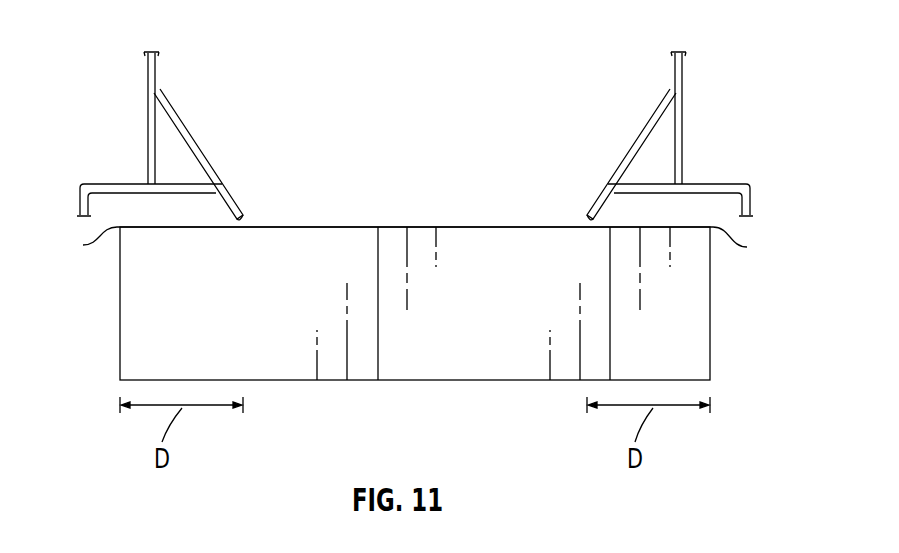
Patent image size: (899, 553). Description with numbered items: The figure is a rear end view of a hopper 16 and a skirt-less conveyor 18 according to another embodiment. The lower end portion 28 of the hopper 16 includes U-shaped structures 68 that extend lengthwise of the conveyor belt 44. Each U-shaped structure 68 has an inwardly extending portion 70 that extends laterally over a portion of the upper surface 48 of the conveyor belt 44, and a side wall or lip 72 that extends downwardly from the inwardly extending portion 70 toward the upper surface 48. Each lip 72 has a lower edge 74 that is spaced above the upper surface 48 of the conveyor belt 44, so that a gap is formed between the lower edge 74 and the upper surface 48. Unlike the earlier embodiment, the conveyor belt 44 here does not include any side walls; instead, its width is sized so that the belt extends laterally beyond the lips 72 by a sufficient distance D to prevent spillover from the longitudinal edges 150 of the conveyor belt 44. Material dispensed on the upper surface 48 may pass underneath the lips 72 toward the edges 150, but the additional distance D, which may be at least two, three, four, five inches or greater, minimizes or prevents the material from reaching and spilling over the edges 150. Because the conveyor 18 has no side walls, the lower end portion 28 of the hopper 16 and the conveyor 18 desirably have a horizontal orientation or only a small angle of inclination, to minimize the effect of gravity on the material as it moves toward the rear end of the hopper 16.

The hopper 16 is at (468, 58).
The lower end portion 28 is at (683, 72).
The U-shaped structure 68 is at (683, 135).
The inwardly extending portion 70 is at (733, 184).
The lip 72 is at (232, 197).
The lower edge 74 is at (245, 222).
The longitudinal edges 150 is at (415, 245).
The conveyor belt 44 is at (415, 188).
The upper surface 48 is at (397, 225).
The conveyor 18 is at (711, 322).